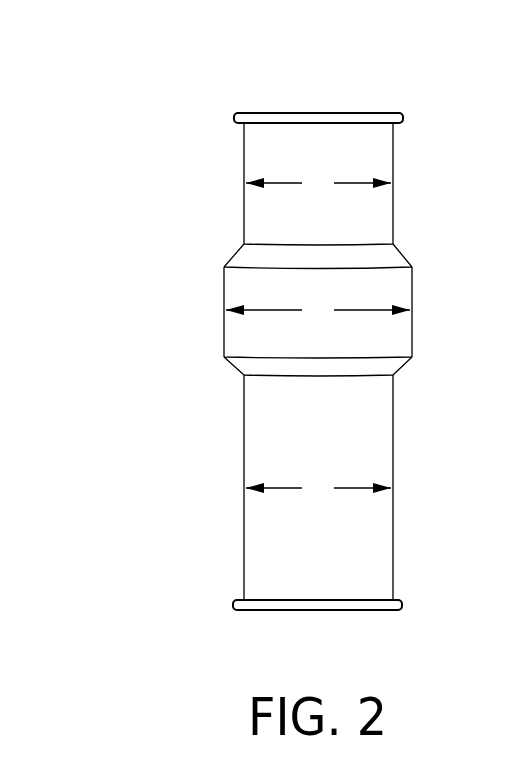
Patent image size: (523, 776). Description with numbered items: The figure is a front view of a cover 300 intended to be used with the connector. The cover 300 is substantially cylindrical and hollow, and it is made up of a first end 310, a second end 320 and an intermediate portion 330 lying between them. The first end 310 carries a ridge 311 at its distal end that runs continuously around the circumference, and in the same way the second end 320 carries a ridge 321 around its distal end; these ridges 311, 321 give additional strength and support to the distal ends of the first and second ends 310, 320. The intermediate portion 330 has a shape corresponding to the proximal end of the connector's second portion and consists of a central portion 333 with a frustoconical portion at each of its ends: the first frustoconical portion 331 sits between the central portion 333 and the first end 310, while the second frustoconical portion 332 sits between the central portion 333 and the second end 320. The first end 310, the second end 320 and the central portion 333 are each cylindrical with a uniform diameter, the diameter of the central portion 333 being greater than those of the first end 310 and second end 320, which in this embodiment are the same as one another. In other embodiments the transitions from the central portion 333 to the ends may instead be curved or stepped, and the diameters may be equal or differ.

The cover 300 is at (281, 329).
The first end 310 is at (376, 175).
The ridge 311 is at (403, 117).
The second end 320 is at (429, 505).
The ridge 321 is at (402, 603).
The intermediate portion 330 is at (339, 313).
The first frustoconical portion 331 is at (240, 256).
The second frustoconical portion 332 is at (240, 366).
The central portion 333 is at (238, 333).